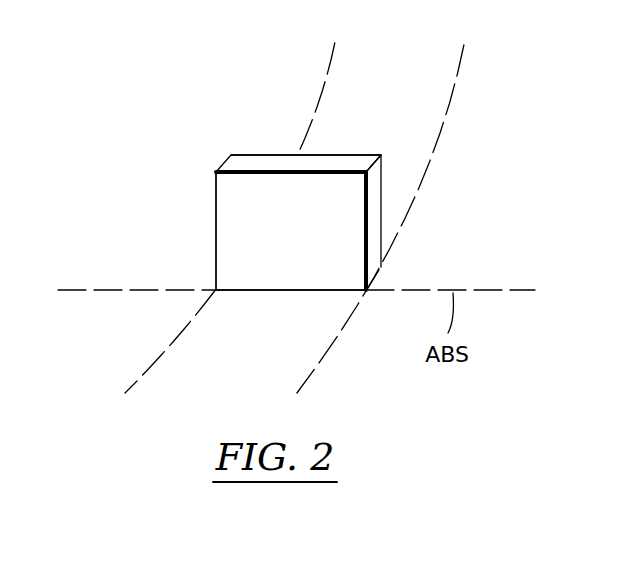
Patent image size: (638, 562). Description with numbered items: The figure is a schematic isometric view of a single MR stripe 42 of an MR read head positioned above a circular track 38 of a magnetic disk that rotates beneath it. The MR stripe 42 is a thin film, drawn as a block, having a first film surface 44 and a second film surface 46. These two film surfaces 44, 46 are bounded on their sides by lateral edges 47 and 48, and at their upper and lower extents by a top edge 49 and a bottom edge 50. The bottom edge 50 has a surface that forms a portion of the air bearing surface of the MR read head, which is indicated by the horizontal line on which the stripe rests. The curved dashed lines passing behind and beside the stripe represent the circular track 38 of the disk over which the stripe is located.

The circular track 38 is at (402, 93).
The MR stripe 42 is at (258, 121).
The first film surface 44 is at (237, 185).
The second film surface 46 is at (338, 155).
The lateral edge 47 is at (217, 258).
The lateral edge 48 is at (375, 222).
The top edge 49 is at (245, 162).
The bottom edge 50 is at (283, 292).